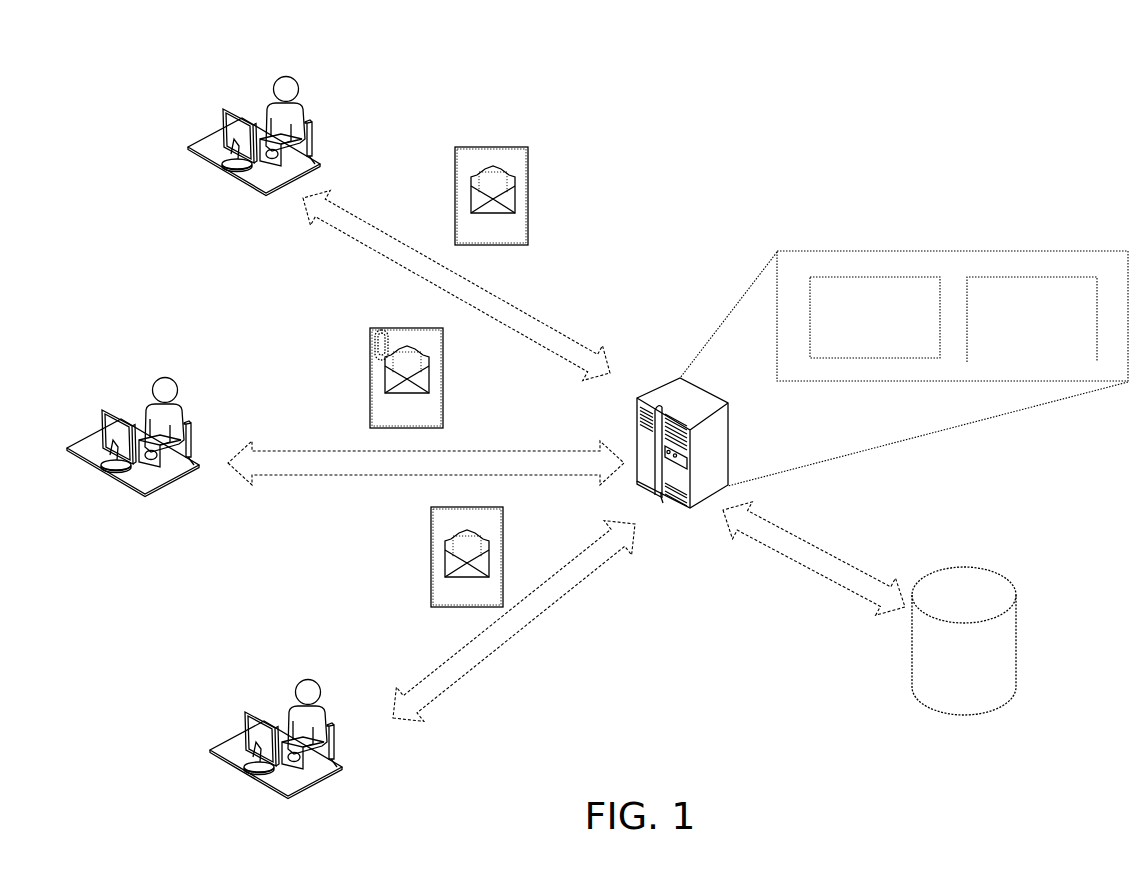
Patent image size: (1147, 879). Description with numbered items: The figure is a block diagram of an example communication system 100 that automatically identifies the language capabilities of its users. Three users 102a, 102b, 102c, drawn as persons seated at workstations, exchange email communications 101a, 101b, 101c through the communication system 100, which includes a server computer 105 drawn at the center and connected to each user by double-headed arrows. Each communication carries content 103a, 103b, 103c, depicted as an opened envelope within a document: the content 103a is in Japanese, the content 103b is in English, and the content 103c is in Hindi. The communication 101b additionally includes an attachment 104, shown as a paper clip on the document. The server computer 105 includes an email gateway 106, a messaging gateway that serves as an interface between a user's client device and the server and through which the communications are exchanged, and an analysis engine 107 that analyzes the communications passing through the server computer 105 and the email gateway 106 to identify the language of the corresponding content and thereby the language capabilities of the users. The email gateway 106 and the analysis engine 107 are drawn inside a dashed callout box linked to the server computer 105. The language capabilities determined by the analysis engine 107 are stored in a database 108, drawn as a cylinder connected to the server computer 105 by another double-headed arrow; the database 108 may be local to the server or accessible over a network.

The communication system 100 is at (581, 43).
The communication 101a is at (494, 189).
The communication 101b is at (407, 378).
The communication 101c is at (469, 551).
The user 102a is at (316, 136).
The user 102b is at (197, 438).
The user 102c is at (338, 740).
The content 103a is at (472, 192).
The content 103b is at (387, 369).
The content 103c is at (447, 551).
The attachment 104 is at (374, 336).
The server computer 105 is at (663, 382).
The email gateway 106 is at (1032, 319).
The analysis engine 107 is at (875, 317).
The database 108 is at (964, 641).